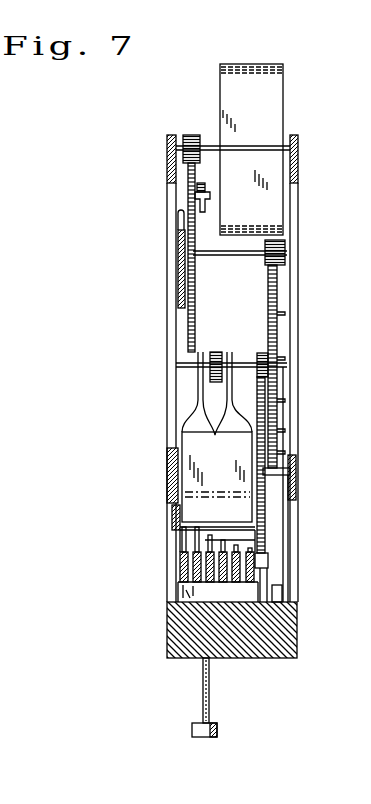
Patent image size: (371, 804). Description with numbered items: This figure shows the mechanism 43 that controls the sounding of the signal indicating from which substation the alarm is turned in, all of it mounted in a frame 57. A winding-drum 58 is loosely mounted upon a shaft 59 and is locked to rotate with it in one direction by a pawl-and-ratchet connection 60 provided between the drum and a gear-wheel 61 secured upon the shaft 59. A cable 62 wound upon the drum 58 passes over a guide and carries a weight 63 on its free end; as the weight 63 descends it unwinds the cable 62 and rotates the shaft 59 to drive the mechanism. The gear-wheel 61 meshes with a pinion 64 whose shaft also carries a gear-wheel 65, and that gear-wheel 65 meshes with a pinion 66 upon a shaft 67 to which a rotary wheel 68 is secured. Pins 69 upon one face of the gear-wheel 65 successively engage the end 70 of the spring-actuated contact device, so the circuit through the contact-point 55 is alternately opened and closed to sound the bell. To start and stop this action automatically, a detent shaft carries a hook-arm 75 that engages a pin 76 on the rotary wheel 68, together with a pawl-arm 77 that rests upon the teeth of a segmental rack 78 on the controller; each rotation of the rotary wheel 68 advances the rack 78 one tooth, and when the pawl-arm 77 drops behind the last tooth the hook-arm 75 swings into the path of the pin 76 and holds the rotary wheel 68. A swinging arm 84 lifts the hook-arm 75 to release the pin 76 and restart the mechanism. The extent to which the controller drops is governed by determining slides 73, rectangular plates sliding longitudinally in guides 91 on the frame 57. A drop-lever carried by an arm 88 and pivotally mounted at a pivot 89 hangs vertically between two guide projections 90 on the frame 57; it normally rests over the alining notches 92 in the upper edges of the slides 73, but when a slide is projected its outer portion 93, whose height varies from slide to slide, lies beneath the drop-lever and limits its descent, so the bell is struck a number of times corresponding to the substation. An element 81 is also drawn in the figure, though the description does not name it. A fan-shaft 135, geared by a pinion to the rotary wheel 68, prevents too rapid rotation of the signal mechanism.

The mechanism 43 is at (312, 368).
The contact-point 55 is at (283, 592).
The frame 57 is at (170, 547).
The winding-drum 58 is at (167, 448).
The shaft 59 is at (298, 486).
The pawl-and-ratchet connection 60 is at (262, 505).
The gear-wheel 61 is at (266, 560).
The cable 62 is at (203, 690).
The weight 63 is at (218, 730).
The pinion 64 is at (260, 362).
The gear-wheel 65 is at (290, 468).
The pinion 66 is at (285, 250).
The shaft 67 is at (227, 256).
The rotary wheel 68 is at (188, 330).
The pins 69 is at (283, 432).
The end of contact device 70 is at (285, 542).
The determining elements or slides 73 is at (183, 582).
The arm 75 is at (205, 186).
The pin 76 is at (210, 197).
The pawl-arm 77 is at (181, 232).
The segmental rack 78 is at (182, 262).
The container 81 is at (217, 477).
The swinging arm 84 is at (208, 196).
The arm 88 is at (210, 380).
The pivot 89 is at (212, 352).
The guide projections 90 is at (173, 512).
The guides 91 is at (188, 590).
The notches or recesses 92 is at (197, 552).
The outer portions 93 is at (212, 580).
The fan-shaft 135 is at (185, 135).